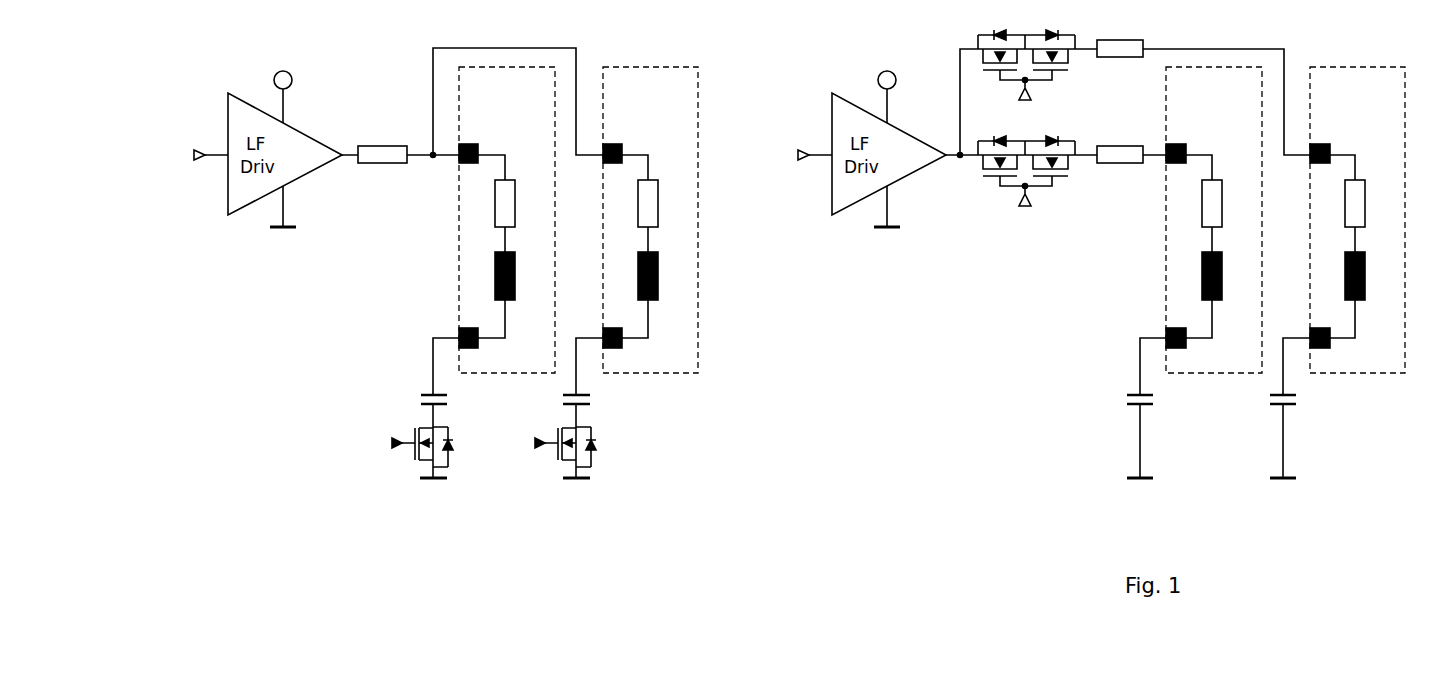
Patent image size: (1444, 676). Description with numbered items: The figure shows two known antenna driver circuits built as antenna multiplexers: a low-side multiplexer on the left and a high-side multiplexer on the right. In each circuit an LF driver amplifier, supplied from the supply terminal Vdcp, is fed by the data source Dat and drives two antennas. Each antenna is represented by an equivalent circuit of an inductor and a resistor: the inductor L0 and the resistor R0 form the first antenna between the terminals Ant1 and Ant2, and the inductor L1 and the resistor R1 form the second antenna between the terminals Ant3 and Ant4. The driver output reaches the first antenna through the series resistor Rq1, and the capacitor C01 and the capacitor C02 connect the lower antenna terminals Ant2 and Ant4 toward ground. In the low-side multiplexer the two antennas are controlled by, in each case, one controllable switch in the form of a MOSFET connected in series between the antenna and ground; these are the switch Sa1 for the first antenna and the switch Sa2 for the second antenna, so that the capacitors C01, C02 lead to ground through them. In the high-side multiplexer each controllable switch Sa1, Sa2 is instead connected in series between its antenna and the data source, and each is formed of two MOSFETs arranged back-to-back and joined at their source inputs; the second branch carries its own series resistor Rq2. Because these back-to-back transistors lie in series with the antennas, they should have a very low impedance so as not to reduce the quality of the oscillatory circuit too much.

The data source Dat is at (483, 156).
The supply voltage Vdcp is at (585, 85).
The first quality resistor Rq1 is at (750, 169).
The second quality resistor Rq2 is at (1120, 63).
The first antenna terminal Ant1 is at (835, 153).
The second antenna terminal Ant2 is at (821, 361).
The third antenna terminal Ant3 is at (979, 153).
The fourth antenna terminal Ant4 is at (965, 361).
The resistor R0 is at (872, 216).
The second antenna resistance R1 is at (1015, 216).
The inductor L0 is at (862, 295).
The second antenna inductance L1 is at (1006, 295).
The first capacitor C01 is at (806, 436).
The second capacitor C02 is at (948, 436).
The first switch Sa1 is at (713, 307).
The second switch Sa2 is at (785, 254).